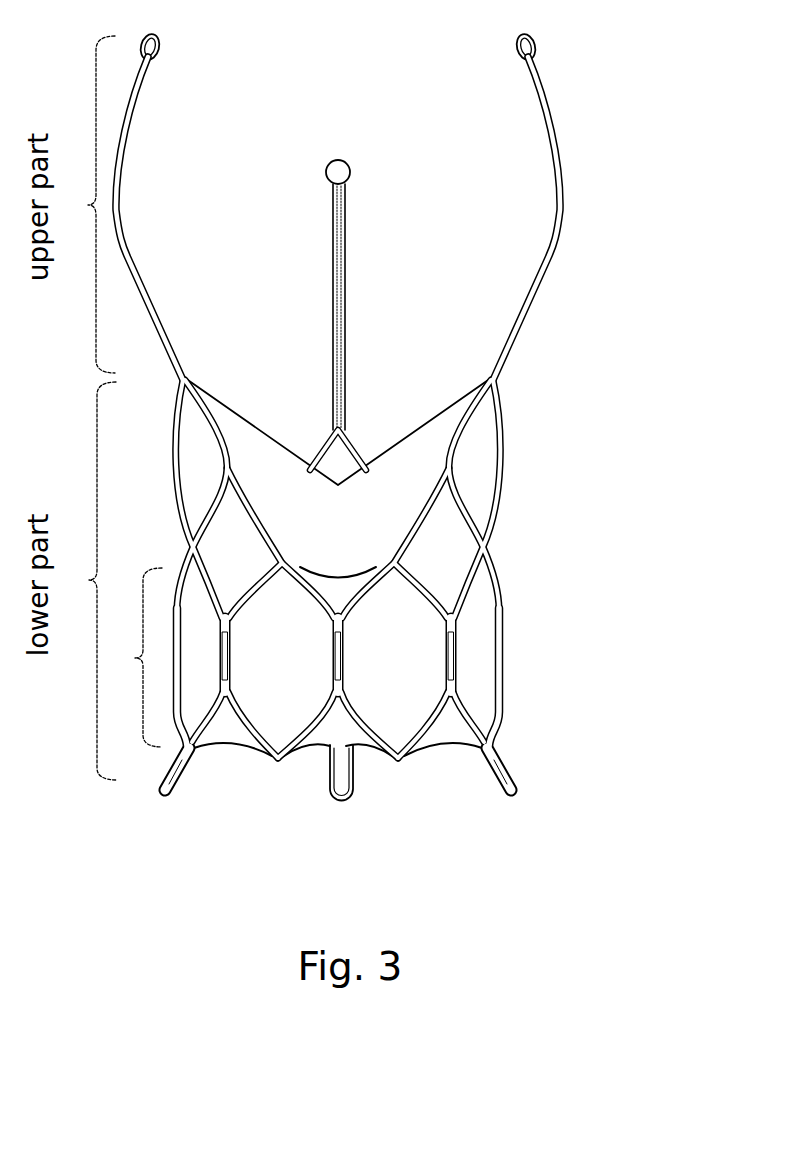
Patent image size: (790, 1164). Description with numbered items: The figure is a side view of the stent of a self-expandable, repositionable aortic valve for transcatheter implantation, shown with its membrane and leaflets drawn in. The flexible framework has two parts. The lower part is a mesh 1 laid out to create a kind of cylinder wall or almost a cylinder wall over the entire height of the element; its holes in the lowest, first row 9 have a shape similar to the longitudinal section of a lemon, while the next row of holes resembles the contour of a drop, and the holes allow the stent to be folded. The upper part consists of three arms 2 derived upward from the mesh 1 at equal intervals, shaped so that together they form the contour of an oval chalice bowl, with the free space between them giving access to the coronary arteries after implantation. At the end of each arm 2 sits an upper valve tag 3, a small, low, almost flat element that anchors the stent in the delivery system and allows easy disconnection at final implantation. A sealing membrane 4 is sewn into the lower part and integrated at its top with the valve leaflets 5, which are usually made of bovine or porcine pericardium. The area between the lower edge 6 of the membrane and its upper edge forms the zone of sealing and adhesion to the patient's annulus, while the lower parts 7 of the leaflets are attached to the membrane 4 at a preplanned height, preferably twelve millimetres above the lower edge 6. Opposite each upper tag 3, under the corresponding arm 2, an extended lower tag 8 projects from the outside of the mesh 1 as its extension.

The mesh 1 is at (345, 655).
The arms 2 is at (345, 358).
The upper valve tag 3 is at (350, 173).
The sealing membrane 4 is at (485, 668).
The valve leaflets 5 is at (255, 462).
The lower edge of the membrane 6 is at (490, 736).
The lower parts of the leaflets 7 is at (340, 570).
The lower tags 8 is at (500, 767).
The first row of mesh holes 9 is at (140, 657).